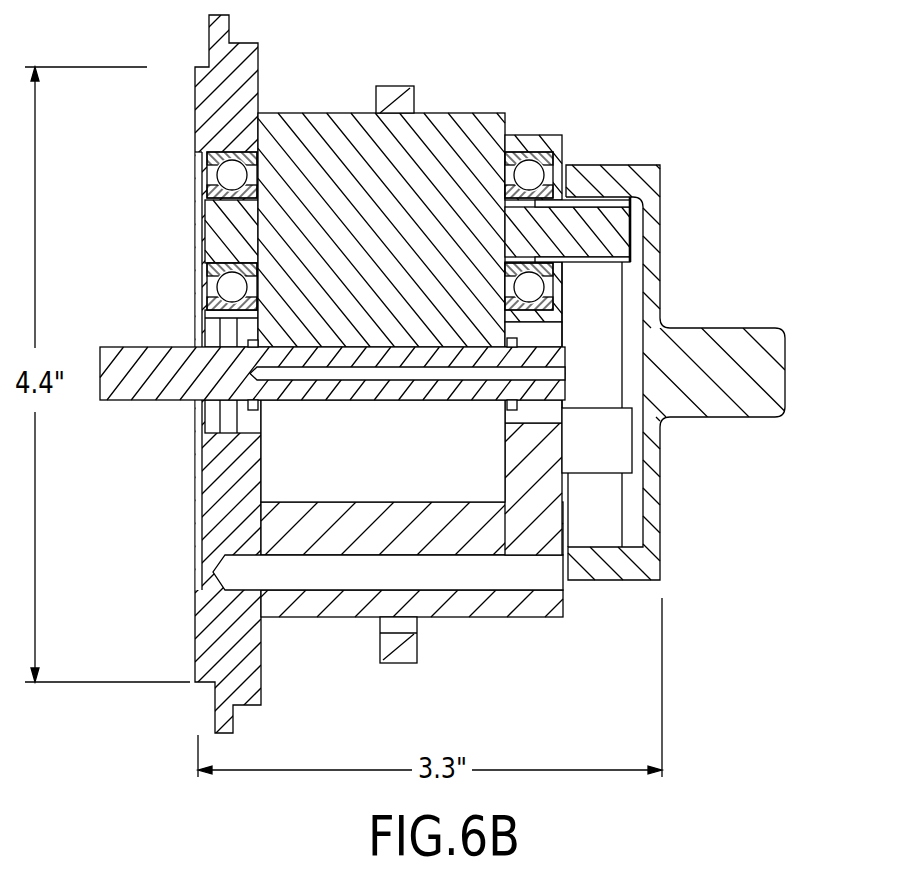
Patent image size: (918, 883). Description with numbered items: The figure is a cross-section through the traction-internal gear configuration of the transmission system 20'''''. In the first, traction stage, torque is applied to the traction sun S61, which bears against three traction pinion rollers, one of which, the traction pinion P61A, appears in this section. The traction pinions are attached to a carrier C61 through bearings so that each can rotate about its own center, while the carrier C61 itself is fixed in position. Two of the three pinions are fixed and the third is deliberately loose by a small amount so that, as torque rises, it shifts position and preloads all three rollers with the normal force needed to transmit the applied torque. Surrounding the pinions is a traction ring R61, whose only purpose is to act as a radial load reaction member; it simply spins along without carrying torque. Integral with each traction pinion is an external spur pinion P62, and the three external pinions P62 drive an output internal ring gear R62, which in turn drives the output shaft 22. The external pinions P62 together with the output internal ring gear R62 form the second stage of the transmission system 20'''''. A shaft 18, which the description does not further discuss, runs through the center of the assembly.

The shaft 18 is at (138, 345).
The output shaft 22 is at (712, 328).
The traction ring R61 is at (414, 104).
The traction pinion P61A is at (498, 118).
The carrier C61 is at (542, 142).
The traction sun S61 is at (364, 401).
The output internal ring gear R62 is at (595, 167).
The external spur pinion P62 is at (618, 200).
The transmission system 20''''' is at (486, 374).